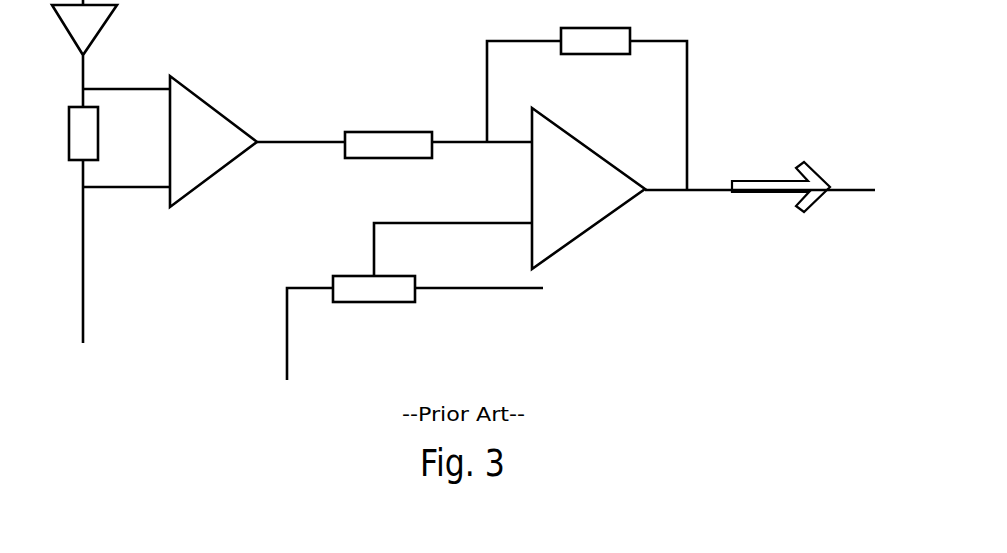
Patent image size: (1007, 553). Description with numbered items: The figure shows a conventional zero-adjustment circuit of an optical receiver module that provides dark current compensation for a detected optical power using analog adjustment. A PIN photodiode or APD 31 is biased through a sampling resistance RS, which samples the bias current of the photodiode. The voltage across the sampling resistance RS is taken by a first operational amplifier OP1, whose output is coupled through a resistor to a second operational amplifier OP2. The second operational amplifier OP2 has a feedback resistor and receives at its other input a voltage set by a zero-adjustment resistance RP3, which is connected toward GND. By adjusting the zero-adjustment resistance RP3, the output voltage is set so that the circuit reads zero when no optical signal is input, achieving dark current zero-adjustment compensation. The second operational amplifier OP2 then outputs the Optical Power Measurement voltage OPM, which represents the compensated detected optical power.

The PIN photodiode or APD 31 is at (84, 53).
The sampling resistance of the bias current RS is at (109, 133).
The operational amplifier OP1 is at (213, 141).
The operational amplifier OP2 is at (588, 188).
The zero-adjustment resistance of the dark current RP3 is at (374, 307).
The ground GND is at (479, 310).
The Optical Power Measurement voltage OPM is at (781, 199).